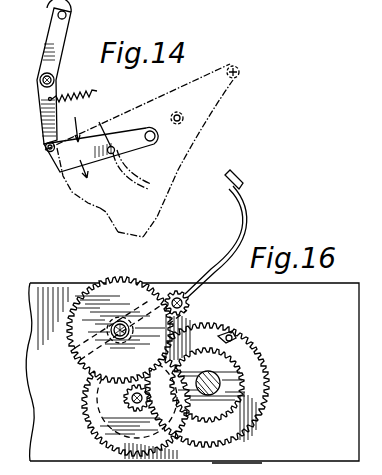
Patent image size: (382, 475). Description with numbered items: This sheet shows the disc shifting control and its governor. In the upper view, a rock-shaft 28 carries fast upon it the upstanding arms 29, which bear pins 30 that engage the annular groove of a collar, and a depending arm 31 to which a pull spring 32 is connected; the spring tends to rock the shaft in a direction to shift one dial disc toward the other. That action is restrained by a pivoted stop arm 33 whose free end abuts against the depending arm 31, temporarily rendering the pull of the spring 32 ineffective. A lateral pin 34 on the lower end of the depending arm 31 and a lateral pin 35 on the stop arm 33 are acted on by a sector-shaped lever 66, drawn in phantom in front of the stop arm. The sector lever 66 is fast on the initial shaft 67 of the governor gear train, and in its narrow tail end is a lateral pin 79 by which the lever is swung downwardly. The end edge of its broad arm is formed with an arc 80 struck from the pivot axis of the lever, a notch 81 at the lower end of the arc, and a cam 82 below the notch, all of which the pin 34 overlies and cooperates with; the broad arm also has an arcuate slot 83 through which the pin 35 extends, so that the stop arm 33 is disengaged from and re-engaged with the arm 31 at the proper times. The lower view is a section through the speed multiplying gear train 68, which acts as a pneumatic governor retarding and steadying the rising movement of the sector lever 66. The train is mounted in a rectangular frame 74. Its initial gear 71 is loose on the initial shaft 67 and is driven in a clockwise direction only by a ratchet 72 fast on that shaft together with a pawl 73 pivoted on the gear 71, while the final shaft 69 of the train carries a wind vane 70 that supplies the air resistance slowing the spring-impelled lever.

In FIG. 14, the rock-shaft 28 is at (40, 80).
In FIG. 14, the upstanding arms 29 is at (52, 33).
In FIG. 14, the pins 30 is at (56, 14).
In FIG. 14, the depending arm 31 is at (41, 120).
In FIG. 14, the pull spring 32 is at (82, 90).
In FIG. 14, the pivoted stop arm 33 is at (66, 160).
In FIG. 14, the lateral pin 34 is at (45, 148).
In FIG. 14, the lateral pin 35 is at (103, 128).
In FIG. 14, the sector-shaped lever 66 is at (146, 102).
In FIG. 14, the initial shaft 67 is at (183, 124).
In FIG. 16, the initial shaft 67 is at (240, 384).
In FIG. 16, the speed multiplying gear train 68 is at (72, 379).
In FIG. 16, the final shaft 69 is at (190, 302).
In FIG. 16, the wind vane 70 is at (232, 241).
In FIG. 16, the initial gear 71 is at (250, 400).
In FIG. 16, the ratchet 72 is at (248, 423).
In FIG. 16, the pawl 73 is at (232, 335).
In FIG. 16, the rectangular frame 74 is at (307, 292).
In FIG. 14, the lateral pin 79 is at (250, 72).
In FIG. 14, the arc 80 is at (70, 192).
In FIG. 14, the notch 81 is at (97, 212).
In FIG. 14, the cam 82 is at (118, 236).
In FIG. 14, the arcuate slot 83 is at (138, 165).